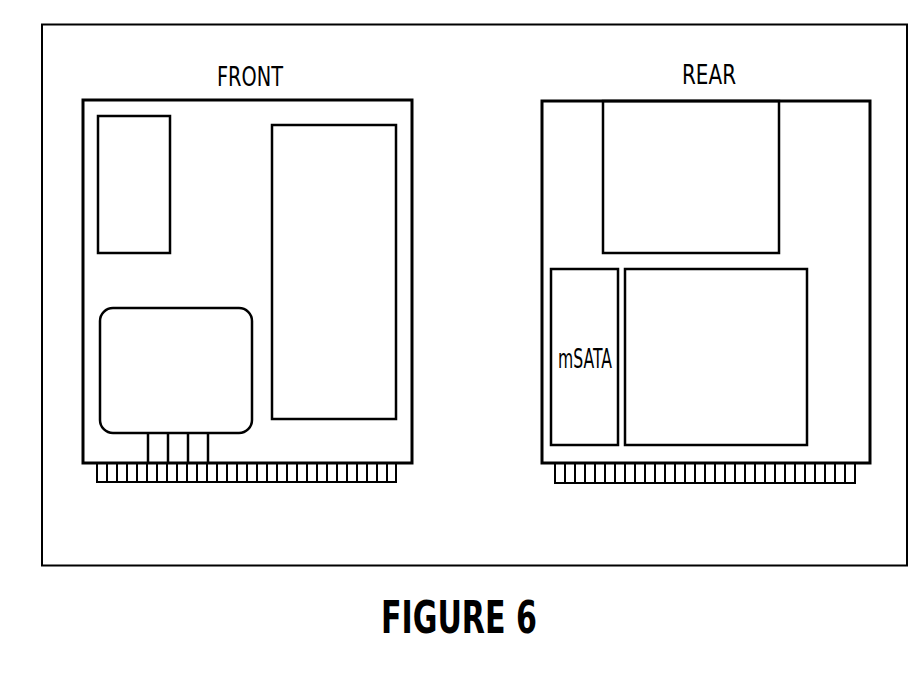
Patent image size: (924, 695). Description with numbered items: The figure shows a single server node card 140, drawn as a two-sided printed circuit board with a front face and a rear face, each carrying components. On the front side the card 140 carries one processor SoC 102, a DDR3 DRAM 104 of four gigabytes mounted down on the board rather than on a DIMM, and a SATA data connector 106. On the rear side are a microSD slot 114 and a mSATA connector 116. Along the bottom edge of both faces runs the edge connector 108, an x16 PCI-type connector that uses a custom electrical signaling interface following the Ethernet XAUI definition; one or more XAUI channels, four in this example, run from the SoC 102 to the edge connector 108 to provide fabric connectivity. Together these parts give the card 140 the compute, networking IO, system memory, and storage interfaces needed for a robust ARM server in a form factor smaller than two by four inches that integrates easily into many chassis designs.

The single server node card 140 is at (478, 64).
The processor SoC 102 is at (195, 348).
The DDR3 DRAM 104 is at (355, 208).
The SATA data connector 106 is at (155, 170).
The edge connector 108 is at (213, 483).
The microSD slot 114 is at (708, 144).
The mSATA connector 116 is at (735, 320).